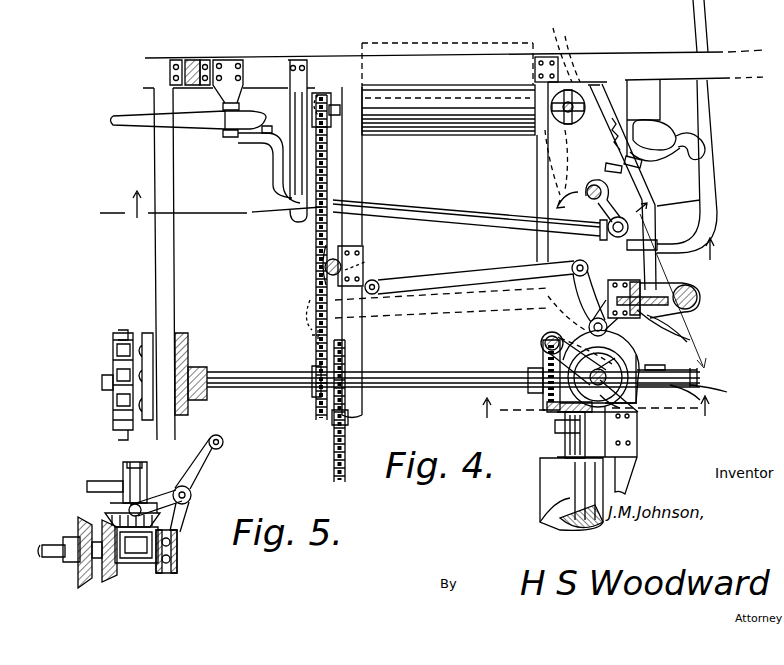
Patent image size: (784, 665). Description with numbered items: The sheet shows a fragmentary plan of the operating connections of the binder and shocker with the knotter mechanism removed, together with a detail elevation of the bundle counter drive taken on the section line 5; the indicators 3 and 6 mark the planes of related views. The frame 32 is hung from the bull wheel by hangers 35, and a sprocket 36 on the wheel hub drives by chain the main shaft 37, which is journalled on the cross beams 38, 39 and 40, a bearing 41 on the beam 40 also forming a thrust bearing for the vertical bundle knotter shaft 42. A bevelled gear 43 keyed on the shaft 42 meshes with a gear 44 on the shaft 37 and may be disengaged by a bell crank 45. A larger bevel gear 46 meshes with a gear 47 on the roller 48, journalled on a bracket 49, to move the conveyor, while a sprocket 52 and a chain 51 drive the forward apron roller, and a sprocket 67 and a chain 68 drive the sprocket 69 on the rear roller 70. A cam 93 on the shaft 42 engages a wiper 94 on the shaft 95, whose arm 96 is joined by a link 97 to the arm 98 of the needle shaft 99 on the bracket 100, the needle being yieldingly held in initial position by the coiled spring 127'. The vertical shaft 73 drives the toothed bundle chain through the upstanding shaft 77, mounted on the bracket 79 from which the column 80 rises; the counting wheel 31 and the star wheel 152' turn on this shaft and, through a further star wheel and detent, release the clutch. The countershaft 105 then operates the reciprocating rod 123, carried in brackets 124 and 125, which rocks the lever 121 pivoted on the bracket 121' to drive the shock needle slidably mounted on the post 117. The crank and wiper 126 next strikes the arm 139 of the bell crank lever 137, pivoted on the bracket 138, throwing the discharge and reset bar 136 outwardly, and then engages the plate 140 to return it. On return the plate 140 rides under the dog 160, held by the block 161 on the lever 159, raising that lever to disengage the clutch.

In FIG. 4, the section line 3 is at (397, 236).
In FIG. 4, the section line 5 is at (595, 409).
In FIG. 4, the section line 6 is at (673, 293).
In FIG. 4, the counting wheel 31 is at (560, 20).
In FIG. 4, the frame 32 is at (735, 46).
In FIG. 4, the hangers 35 is at (188, 340).
In FIG. 4, the sprocket 36 is at (112, 355).
In FIG. 4, the main shaft 37 is at (447, 372).
In FIG. 5, the main shaft 37 is at (52, 542).
In FIG. 4, the cross beam 38 is at (168, 226).
In FIG. 4, the cross beam 39 is at (395, 180).
In FIG. 4, the cross beam 40 is at (633, 470).
In FIG. 5, the cross beam 40 is at (176, 574).
In FIG. 5, the bearing 41 is at (138, 565).
In FIG. 4, the bundle knotter shaft 42 is at (640, 414).
In FIG. 5, the bundle knotter shaft 42 is at (120, 466).
In FIG. 4, the bevelled gear 43 is at (658, 404).
In FIG. 5, the bevelled gear 43 is at (170, 520).
In FIG. 5, the gear 44 is at (112, 584).
In FIG. 4, the bell crank 45 is at (710, 395).
In FIG. 5, the bell crank 45 is at (202, 472).
In FIG. 4, the bevel gear 46 is at (543, 395).
In FIG. 5, the bevel gear 46 is at (88, 588).
In FIG. 4, the bevel gear 47 is at (552, 413).
In FIG. 4, the roller 48 is at (540, 512).
In FIG. 4, the bracket 49 is at (565, 448).
In FIG. 4, the chain 51 is at (350, 432).
In FIG. 4, the sprocket 52 is at (350, 390).
In FIG. 4, the sprocket 67 is at (314, 372).
In FIG. 4, the chain 68 is at (316, 296).
In FIG. 4, the sprocket 69 is at (330, 105).
In FIG. 4, the roller 70 is at (407, 122).
In FIG. 4, the vertical shaft 73 is at (602, 88).
In FIG. 4, the upstanding shaft 77 is at (693, 303).
In FIG. 4, the bracket 79 is at (690, 313).
In FIG. 4, the column 80 is at (678, 333).
In FIG. 4, the cam 93 is at (574, 312).
In FIG. 5, the cam 93 is at (87, 486).
In FIG. 4, the wiper 94 is at (542, 338).
In FIG. 4, the shaft 95 is at (625, 338).
In FIG. 4, the arm 96 is at (592, 260).
In FIG. 4, the link 97 is at (466, 278).
In FIG. 4, the arm 98 is at (368, 268).
In FIG. 4, the needle shaft 99 is at (322, 262).
In FIG. 4, the bracket 100 is at (360, 250).
In FIG. 4, the countershaft 105 is at (595, 184).
In FIG. 4, the post 117 is at (195, 60).
In FIG. 4, the lever 121 is at (186, 140).
In FIG. 4, the bracket 121' is at (232, 74).
In FIG. 4, the reciprocating rod 123 is at (422, 213).
In FIG. 4, the bracket 124 is at (298, 68).
In FIG. 4, the bracket 125 is at (538, 57).
In FIG. 4, the crank and wiper 126 is at (600, 218).
In FIG. 4, the coiled spring 127' is at (261, 164).
In FIG. 4, the discharge and reset bar 136 is at (708, 105).
In FIG. 4, the bell crank lever 137 is at (704, 150).
In FIG. 4, the bracket 138 is at (658, 126).
In FIG. 4, the arm 139 is at (616, 174).
In FIG. 4, the plate 140 is at (718, 228).
In FIG. 4, the star wheel 152' is at (574, 146).
In FIG. 4, the lever 159 is at (648, 200).
In FIG. 4, the dog 160 is at (660, 210).
In FIG. 4, the block 161 is at (668, 228).